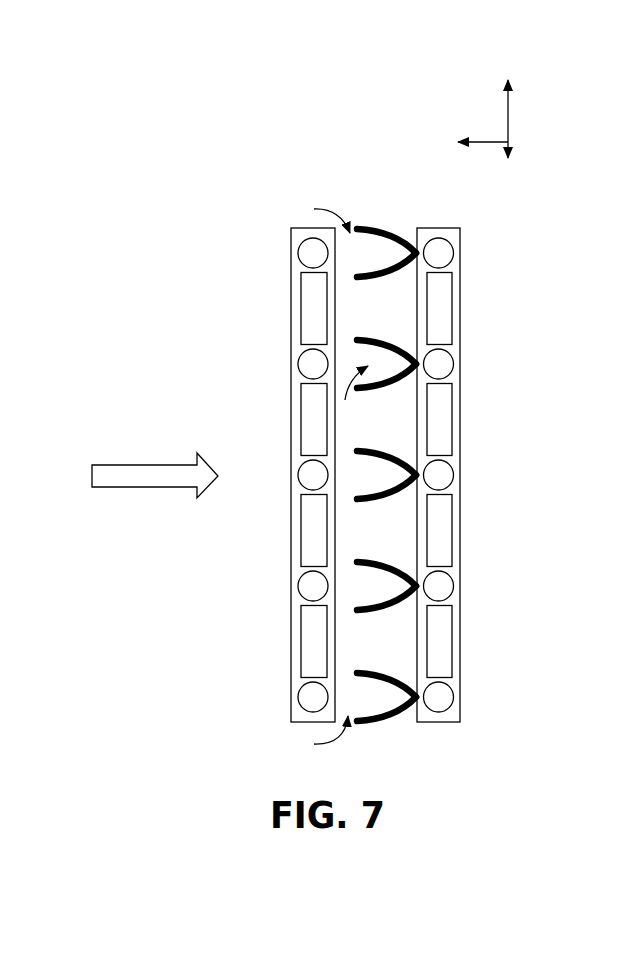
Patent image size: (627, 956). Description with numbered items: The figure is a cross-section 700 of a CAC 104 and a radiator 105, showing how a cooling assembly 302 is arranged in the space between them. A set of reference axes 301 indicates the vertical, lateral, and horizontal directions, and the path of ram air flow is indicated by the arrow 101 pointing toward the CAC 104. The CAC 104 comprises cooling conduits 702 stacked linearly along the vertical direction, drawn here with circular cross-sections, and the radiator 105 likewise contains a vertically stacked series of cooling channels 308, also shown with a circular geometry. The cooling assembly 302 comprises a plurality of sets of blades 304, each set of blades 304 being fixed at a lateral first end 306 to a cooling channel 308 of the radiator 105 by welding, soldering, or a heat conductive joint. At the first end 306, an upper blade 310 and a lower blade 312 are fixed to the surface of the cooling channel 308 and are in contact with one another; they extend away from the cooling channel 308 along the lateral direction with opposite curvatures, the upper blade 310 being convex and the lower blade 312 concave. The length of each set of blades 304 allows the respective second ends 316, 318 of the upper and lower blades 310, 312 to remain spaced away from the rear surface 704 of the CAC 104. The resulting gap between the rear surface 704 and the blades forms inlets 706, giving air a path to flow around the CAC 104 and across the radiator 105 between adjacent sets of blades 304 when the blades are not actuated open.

The cross-section 700 is at (248, 128).
The arrow 101 is at (130, 487).
The CAC 104 is at (292, 459).
The radiator 105 is at (494, 467).
The set of reference axes 301 is at (465, 90).
The cooling assembly 302 is at (353, 443).
The set of blades 304 is at (353, 391).
The first end 306 is at (386, 472).
The cooling channel 308 is at (453, 368).
The upper blade 310 is at (380, 337).
The lower blade 312 is at (392, 387).
The second end 316 is at (412, 236).
The second end 318 is at (360, 500).
The cooling conduits 702 is at (294, 362).
The rear surface 704 is at (335, 627).
The inlets 706 is at (316, 475).